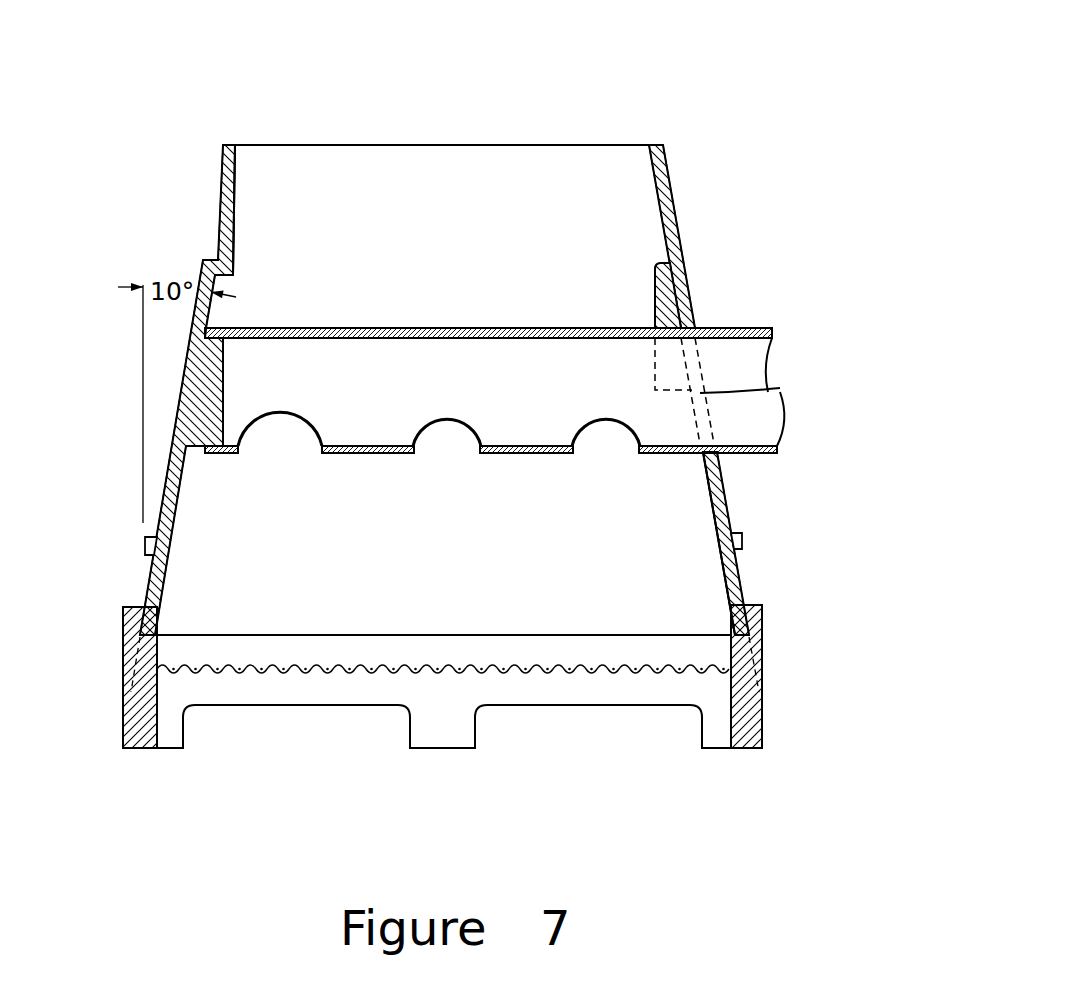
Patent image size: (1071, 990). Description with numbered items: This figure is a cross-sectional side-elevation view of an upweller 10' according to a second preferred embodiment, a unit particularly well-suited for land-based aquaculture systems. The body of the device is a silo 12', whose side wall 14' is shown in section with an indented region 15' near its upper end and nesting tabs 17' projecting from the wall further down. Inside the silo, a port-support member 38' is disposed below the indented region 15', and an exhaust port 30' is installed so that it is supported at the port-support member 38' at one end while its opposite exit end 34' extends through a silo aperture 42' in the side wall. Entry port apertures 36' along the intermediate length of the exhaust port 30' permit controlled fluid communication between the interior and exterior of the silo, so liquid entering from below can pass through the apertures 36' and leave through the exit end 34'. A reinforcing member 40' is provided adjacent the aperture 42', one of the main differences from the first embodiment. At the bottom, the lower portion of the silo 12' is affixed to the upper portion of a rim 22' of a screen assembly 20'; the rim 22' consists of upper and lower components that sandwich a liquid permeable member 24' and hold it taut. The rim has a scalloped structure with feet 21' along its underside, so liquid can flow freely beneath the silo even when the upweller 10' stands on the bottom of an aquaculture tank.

The upweller 10' is at (529, 86).
The silo 12' is at (445, 418).
The side wall outer surface 14' is at (676, 543).
The indented region 15' is at (276, 213).
The nesting tabs 17' is at (446, 558).
The screen assembly 20' is at (499, 676).
The base underside 21' is at (444, 732).
The rim 22' is at (818, 679).
The liquid permeable member 24' is at (443, 616).
The exhaust port 30' is at (488, 295).
The exit end 34' is at (542, 422).
The entry port apertures 36' is at (439, 435).
The port-support member 38' is at (257, 469).
The reinforcing member 40' is at (632, 321).
The silo aperture 42' is at (790, 365).